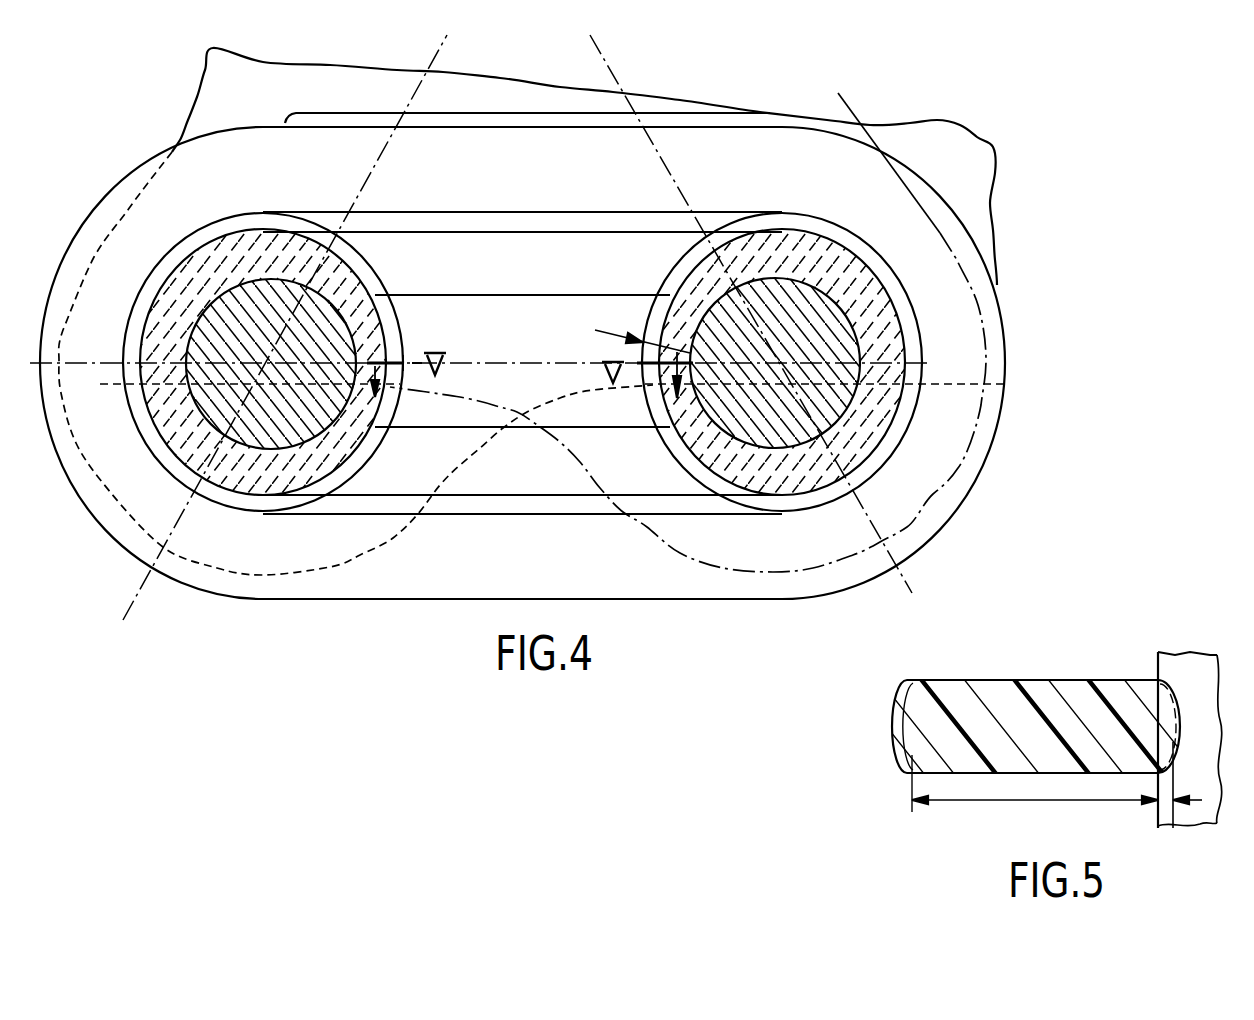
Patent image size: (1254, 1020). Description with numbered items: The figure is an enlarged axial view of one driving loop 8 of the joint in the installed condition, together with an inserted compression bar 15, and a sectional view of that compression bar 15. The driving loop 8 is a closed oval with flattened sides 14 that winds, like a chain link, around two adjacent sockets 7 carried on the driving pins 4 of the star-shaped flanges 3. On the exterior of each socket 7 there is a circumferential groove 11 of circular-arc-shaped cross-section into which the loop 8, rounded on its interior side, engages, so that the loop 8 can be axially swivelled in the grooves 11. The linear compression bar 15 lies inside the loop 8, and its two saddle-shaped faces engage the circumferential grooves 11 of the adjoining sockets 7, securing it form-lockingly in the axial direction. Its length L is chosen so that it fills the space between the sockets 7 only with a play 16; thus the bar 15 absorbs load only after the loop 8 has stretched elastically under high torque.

In FIG. 4, the flange 3 is at (470, 460).
In FIG. 4, the driving pin 4 is at (297, 332).
In FIG. 4, the socket 7 is at (250, 483).
In FIG. 5, the socket 7 is at (1153, 661).
In FIG. 4, the driving loop 8 is at (527, 181).
In FIG. 4, the circumferential groove 11 is at (383, 276).
In FIG. 4, the flattened side 14 is at (528, 113).
In FIG. 4, the compression bar 15 is at (527, 355).
In FIG. 5, the compression bar 15 is at (935, 726).
In FIG. 4, the play 16 is at (643, 337).
In FIG. 5, the play 16 is at (1162, 822).